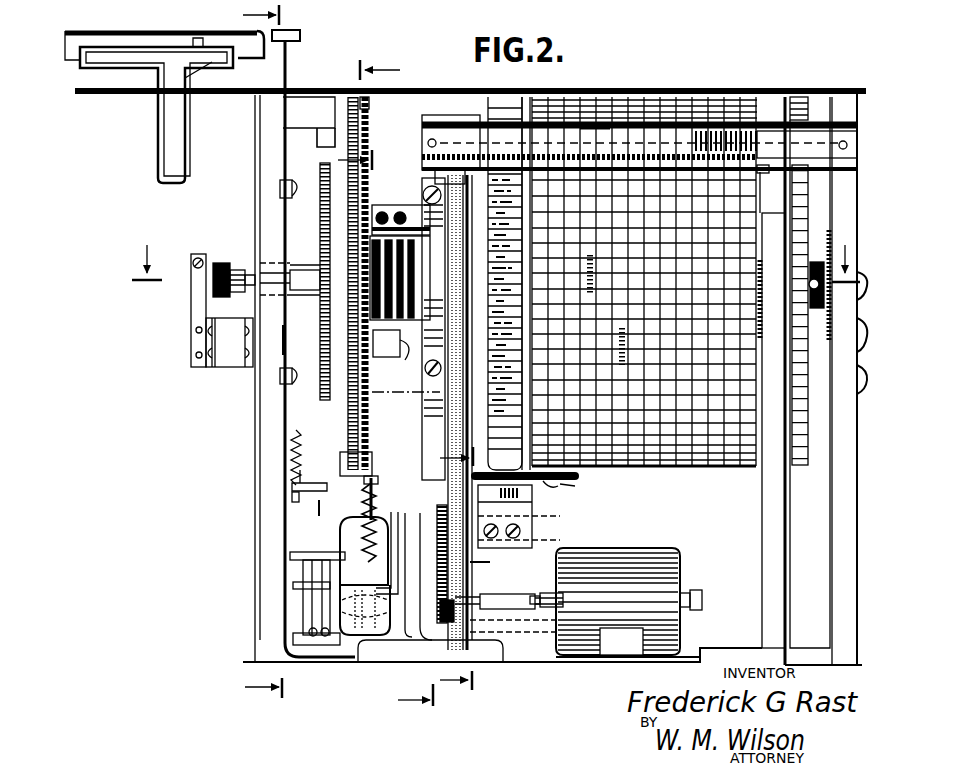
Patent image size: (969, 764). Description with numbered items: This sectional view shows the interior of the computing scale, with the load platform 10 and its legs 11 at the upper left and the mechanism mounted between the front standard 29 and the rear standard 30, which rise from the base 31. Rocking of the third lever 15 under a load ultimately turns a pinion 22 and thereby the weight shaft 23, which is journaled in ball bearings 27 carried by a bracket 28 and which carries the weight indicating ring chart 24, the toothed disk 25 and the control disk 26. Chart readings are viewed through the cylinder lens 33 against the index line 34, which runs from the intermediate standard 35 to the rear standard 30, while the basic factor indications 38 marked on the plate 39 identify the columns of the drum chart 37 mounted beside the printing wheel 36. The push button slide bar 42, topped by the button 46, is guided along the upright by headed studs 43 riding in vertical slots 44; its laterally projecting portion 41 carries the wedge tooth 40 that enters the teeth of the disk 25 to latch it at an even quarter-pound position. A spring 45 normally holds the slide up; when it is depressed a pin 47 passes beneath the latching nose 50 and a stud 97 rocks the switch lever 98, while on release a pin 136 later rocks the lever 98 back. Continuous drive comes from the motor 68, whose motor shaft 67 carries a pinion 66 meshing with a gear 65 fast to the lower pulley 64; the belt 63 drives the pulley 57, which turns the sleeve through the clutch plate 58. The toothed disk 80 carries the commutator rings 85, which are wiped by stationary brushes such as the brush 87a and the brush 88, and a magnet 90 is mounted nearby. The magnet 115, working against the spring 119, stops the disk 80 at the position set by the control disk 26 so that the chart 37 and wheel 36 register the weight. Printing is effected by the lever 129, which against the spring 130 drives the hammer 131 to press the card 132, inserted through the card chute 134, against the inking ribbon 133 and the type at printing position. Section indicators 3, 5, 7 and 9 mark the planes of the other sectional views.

The load platform 10 is at (158, 31).
The legs 11 is at (163, 150).
The button 46 is at (302, 33).
The push button slide bar 42 is at (289, 60).
The laterally projecting portion 41 is at (300, 108).
The wedge tooth 40 is at (318, 138).
The headed studs 43 is at (300, 188).
The vertical slots 44 is at (288, 340).
The front standard 29 is at (265, 412).
The ball bearings 27 is at (200, 283).
The bracket 28 is at (228, 365).
The pinion 22 is at (222, 263).
The weight shaft 23 is at (312, 270).
The section line 7 is at (496, 276).
The toothed disk 25 is at (320, 198).
The control disk 26 is at (349, 185).
The toothed disk 80 is at (366, 104).
The third lever 15 is at (400, 430).
The commutator rings 85 is at (400, 211).
The stationary brush 88 is at (372, 232).
The stationary brush 87a is at (416, 245).
The magnet 90 is at (410, 352).
The intermediate standard 35 is at (445, 118).
The pulley 57 is at (447, 180).
The clutch plate 58 is at (487, 232).
The printing wheel 36 is at (500, 100).
The index line 34 is at (605, 140).
The drum chart 37 is at (603, 110).
The cylinder lens 33 is at (698, 150).
The basic factor indications 38 is at (607, 130).
The weight indicating ring chart 24 is at (797, 97).
The plate 39 is at (763, 172).
The rear standard 30 is at (838, 497).
The base 31 is at (378, 668).
The pinion 66 is at (446, 628).
The section line 3 is at (271, 353).
The rod / section line 5 is at (371, 290).
The section line 9 is at (464, 568).
The spring 45 is at (300, 456).
The pin 47 is at (309, 483).
The latching nose 50 is at (320, 508).
The magnet 115 is at (365, 546).
The spring 119 is at (346, 527).
The stud 97 is at (292, 560).
The pin 136 is at (290, 585).
The switch lever 98 is at (292, 597).
The gear 65 is at (438, 508).
The motor shaft 67 is at (453, 618).
The lower pulley 64 is at (474, 583).
The belt 63 is at (485, 562).
The card chute 134 is at (583, 477).
The inking ribbon 133 is at (548, 484).
The card 132 is at (566, 484).
The hammer 131 is at (540, 498).
The lever 129 is at (534, 516).
The spring 130 is at (533, 538).
The motor 68 is at (612, 553).